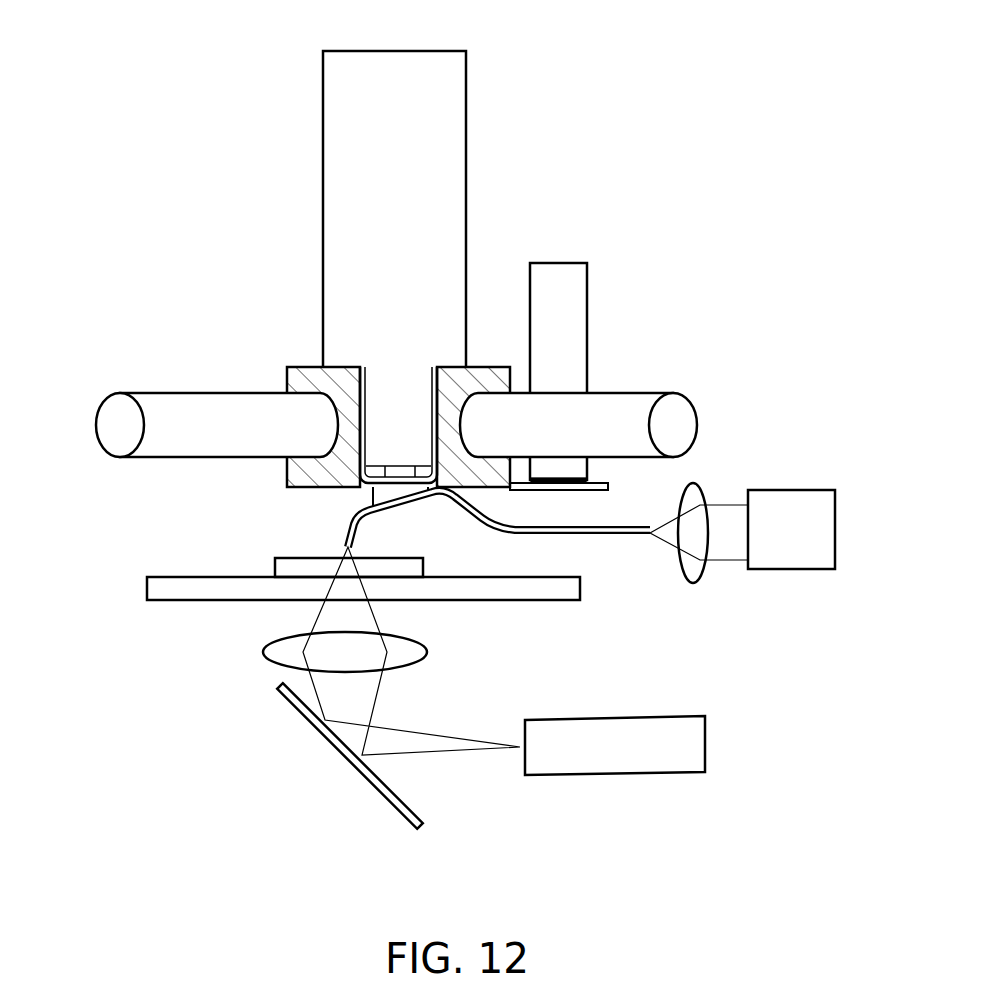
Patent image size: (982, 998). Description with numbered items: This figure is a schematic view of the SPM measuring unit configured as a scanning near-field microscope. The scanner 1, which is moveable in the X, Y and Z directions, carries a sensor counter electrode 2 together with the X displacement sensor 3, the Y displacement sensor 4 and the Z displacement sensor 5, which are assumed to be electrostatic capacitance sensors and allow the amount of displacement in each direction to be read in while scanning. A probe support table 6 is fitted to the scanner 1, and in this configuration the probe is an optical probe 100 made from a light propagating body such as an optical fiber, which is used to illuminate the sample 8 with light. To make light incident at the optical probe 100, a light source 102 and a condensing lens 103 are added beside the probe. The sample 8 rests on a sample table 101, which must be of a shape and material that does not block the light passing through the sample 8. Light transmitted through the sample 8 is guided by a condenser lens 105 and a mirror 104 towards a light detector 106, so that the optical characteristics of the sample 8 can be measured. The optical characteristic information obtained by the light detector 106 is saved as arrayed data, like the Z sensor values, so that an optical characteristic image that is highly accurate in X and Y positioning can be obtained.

The scanner 1 is at (350, 58).
The sensor counter electrode 2 is at (292, 372).
The X displacement sensor 3 is at (108, 425).
The Y displacement sensor 4 is at (617, 402).
The Z displacement sensor 5 is at (570, 297).
The probe support table 6 is at (375, 500).
The sample 8 is at (313, 568).
The optical probe 100 is at (603, 535).
The sample table 101 is at (180, 590).
The light source 102 is at (773, 500).
The condensing lens 103 is at (700, 495).
The mirror 104 is at (293, 702).
The condenser lens 105 is at (283, 652).
The light detector 106 is at (572, 753).